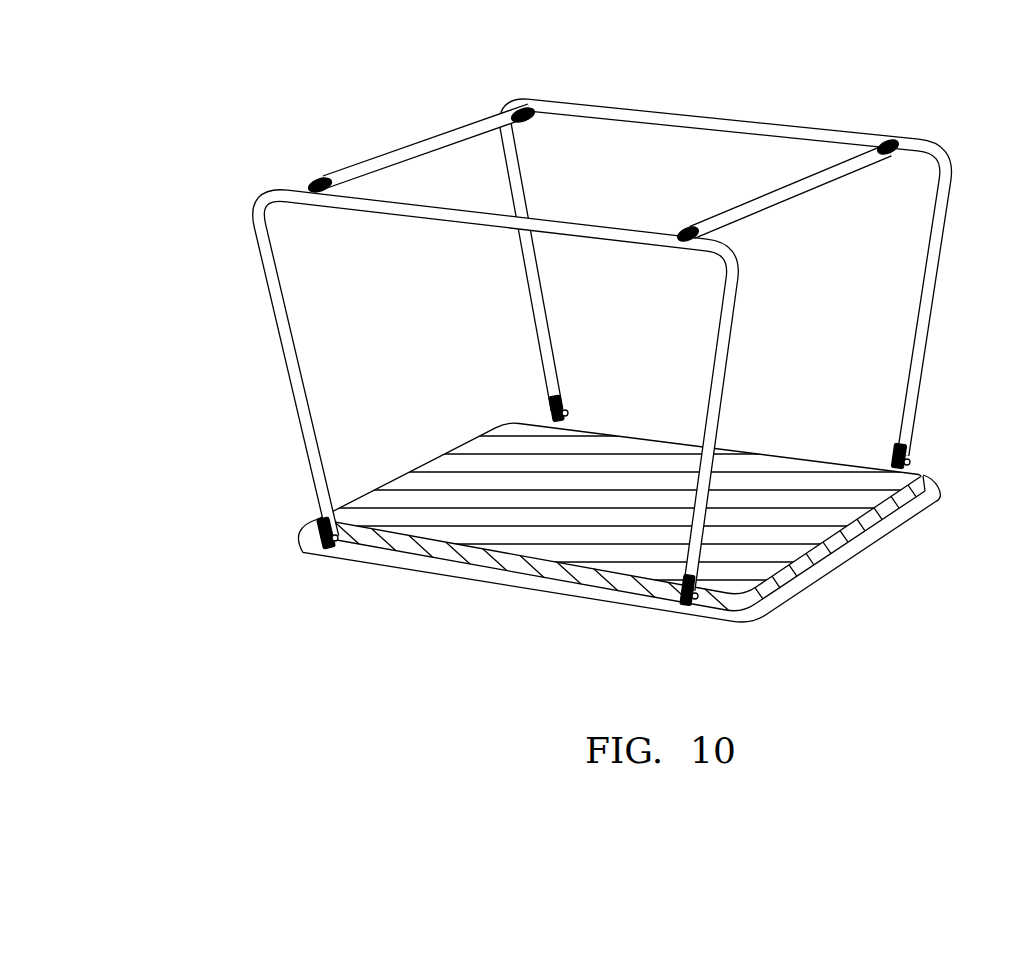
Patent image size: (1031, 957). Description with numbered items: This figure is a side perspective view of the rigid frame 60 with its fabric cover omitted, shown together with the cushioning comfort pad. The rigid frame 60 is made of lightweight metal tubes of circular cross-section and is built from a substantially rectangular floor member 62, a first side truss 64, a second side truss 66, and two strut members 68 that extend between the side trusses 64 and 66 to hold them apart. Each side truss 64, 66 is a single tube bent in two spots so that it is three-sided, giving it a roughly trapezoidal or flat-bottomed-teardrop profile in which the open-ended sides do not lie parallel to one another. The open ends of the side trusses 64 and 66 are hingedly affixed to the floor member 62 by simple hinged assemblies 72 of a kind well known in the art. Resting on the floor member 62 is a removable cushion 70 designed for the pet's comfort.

The rigid frame 60 is at (912, 97).
The floor member 62 is at (848, 552).
The first side truss 64 is at (277, 293).
The second side truss 66 is at (940, 222).
The strut member 68 is at (406, 148).
The removable cushion 70 is at (754, 480).
The hinged assembly 72 is at (564, 400).